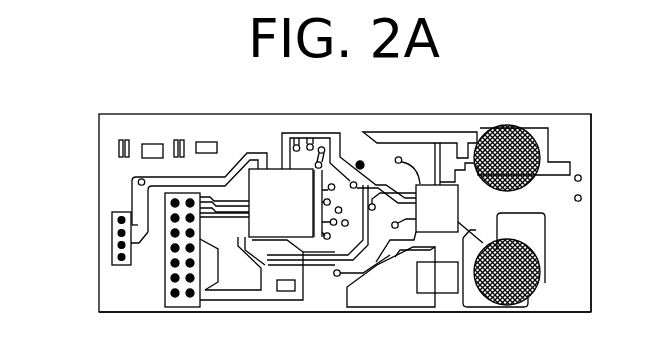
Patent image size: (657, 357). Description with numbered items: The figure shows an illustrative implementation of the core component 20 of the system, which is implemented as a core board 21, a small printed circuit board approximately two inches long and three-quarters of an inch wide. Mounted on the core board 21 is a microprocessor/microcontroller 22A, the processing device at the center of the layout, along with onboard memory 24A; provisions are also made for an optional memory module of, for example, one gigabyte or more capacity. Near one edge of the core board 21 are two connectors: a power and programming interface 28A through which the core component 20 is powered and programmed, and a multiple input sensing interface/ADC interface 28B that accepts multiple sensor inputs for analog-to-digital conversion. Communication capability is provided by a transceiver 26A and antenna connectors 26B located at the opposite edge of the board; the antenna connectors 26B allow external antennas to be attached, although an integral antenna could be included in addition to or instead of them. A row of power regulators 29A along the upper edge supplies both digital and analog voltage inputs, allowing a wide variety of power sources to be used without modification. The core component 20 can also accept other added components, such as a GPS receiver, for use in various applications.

The core component 20 is at (103, 103).
The core board 21 is at (584, 116).
The microprocessor/microcontroller 22A is at (281, 203).
The onboard memory 24A is at (240, 301).
The transceiver 26A is at (437, 208).
The antenna connectors 26B is at (592, 208).
The power and programming interface 28A is at (112, 243).
The multiple input sensing interface/ADC interface 28B is at (179, 307).
The power regulators 29A is at (171, 133).